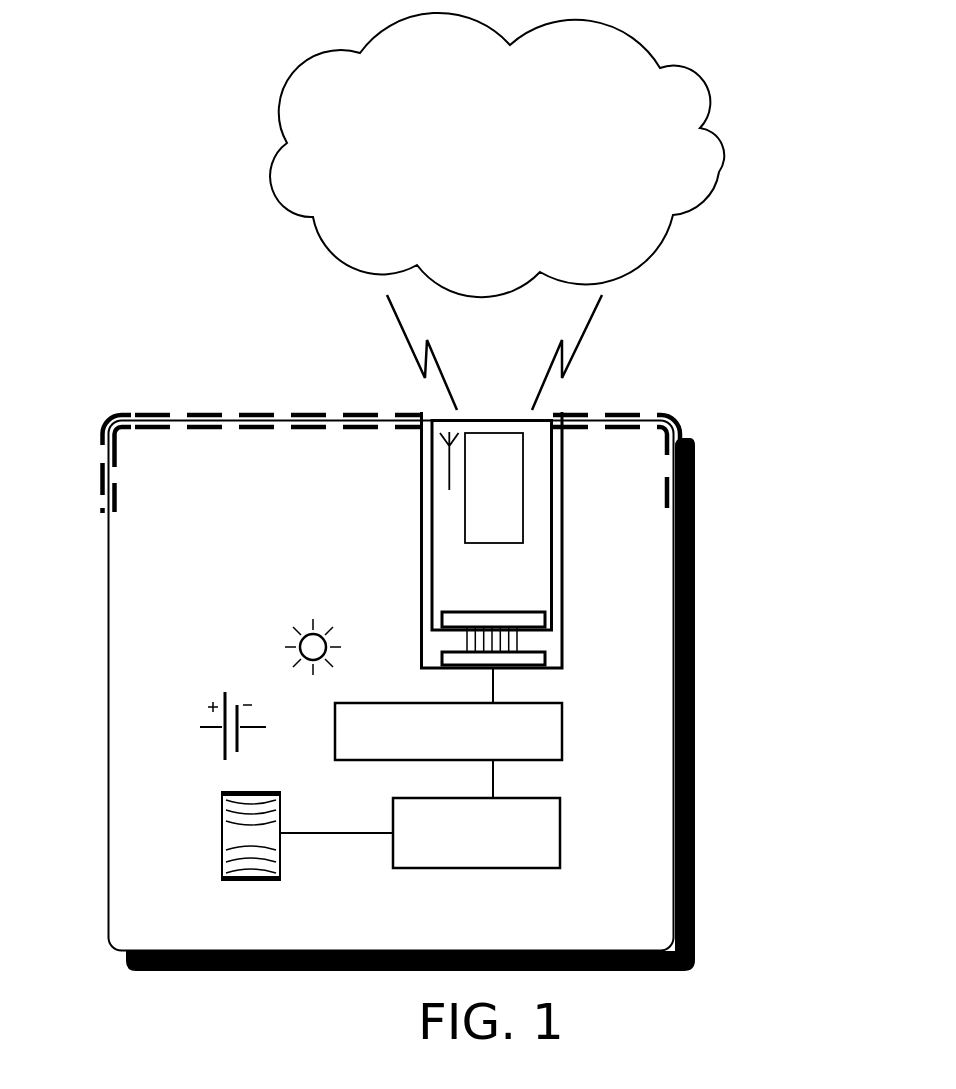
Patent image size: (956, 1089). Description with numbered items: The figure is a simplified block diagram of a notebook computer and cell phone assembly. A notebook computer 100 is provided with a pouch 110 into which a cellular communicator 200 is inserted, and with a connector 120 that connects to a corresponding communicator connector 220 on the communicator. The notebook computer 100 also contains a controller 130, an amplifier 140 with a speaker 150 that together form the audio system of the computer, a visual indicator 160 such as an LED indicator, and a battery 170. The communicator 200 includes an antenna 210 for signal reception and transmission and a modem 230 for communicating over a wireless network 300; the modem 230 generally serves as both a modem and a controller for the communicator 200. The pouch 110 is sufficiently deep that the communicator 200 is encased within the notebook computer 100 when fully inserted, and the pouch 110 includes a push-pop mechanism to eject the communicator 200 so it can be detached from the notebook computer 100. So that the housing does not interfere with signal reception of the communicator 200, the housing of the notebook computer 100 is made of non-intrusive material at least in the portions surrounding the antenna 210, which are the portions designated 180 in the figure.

The notebook computer 100 is at (138, 603).
The pouch 110 is at (420, 581).
The connector 120 is at (533, 658).
The controller 130 is at (565, 727).
The amplifier 140 is at (563, 831).
The speaker 150 is at (218, 833).
The visual indicator 160 is at (273, 647).
The battery 170 is at (213, 741).
The non-intrusive housing portions 180 is at (253, 413).
The cellular communicator 200 is at (443, 530).
The antenna 210 is at (447, 469).
The communicator connector 220 is at (533, 619).
The modem 230 is at (525, 485).
The wireless network 300 is at (705, 175).